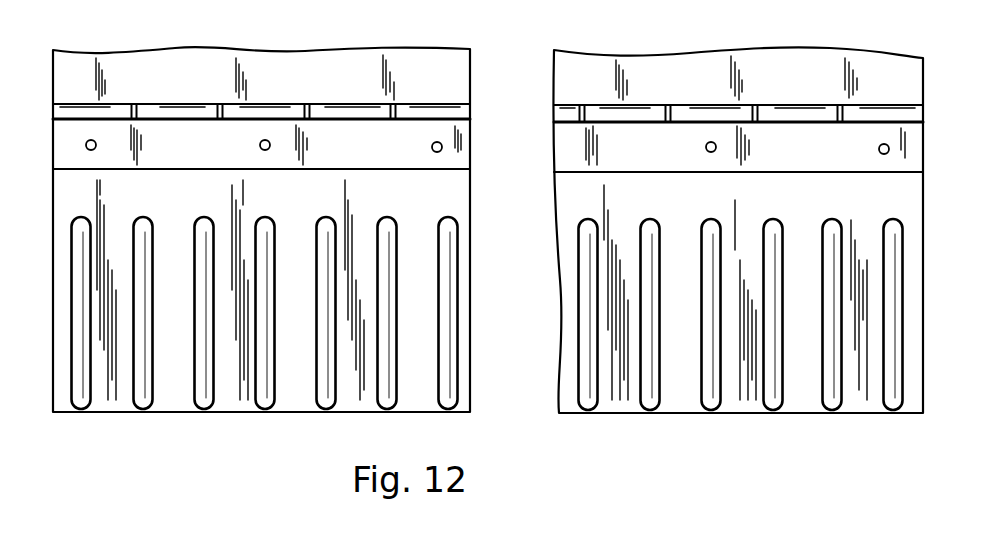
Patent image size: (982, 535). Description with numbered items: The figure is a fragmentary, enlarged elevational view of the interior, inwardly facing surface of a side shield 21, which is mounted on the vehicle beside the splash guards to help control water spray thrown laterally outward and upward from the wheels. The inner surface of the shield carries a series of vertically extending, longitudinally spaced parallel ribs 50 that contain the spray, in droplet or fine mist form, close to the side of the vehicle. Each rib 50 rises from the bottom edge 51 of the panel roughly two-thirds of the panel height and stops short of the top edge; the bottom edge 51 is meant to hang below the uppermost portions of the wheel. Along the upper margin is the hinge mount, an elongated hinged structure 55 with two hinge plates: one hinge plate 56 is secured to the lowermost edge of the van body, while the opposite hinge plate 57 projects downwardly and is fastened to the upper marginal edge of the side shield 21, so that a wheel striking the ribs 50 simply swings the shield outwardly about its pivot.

The side shield 21 is at (619, 418).
The ribs 50 is at (323, 246).
The bottom edge 51 is at (300, 414).
The elongated hinged structure 55 is at (902, 115).
The hinge plate 56 is at (895, 82).
The hinge plate 57 is at (907, 162).